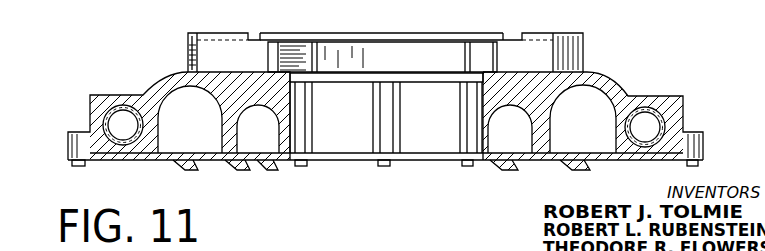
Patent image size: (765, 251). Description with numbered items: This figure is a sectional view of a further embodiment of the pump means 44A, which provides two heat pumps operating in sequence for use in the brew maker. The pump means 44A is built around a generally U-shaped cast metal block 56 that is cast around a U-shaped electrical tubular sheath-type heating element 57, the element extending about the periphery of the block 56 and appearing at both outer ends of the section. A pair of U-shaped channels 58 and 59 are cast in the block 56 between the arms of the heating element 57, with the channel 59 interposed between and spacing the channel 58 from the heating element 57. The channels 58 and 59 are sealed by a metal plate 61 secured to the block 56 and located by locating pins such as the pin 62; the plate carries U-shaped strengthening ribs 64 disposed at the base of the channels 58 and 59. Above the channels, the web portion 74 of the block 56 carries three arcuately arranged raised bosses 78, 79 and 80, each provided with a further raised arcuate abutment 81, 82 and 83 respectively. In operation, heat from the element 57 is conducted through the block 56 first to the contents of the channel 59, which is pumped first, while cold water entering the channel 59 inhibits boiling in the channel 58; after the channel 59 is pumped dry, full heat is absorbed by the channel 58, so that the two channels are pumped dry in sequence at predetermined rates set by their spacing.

The pump means 44A is at (382, 101).
The cast metal block 56 is at (672, 97).
The electrical tubular sheath-type heating element 57 is at (125, 106).
The channel 58 is at (266, 142).
The channel 59 is at (198, 124).
The metal plate 61 is at (236, 163).
The locating pin 62 is at (389, 167).
The U-shaped strengthening rib 64 is at (187, 168).
The web portion 74 is at (435, 83).
The raised boss 78 is at (262, 38).
The raised boss 79 is at (518, 33).
The raised boss 80 is at (447, 40).
The raised arcuate abutment 81 is at (233, 33).
The raised arcuate abutment 82 is at (557, 33).
The raised arcuate abutment 83 is at (404, 27).